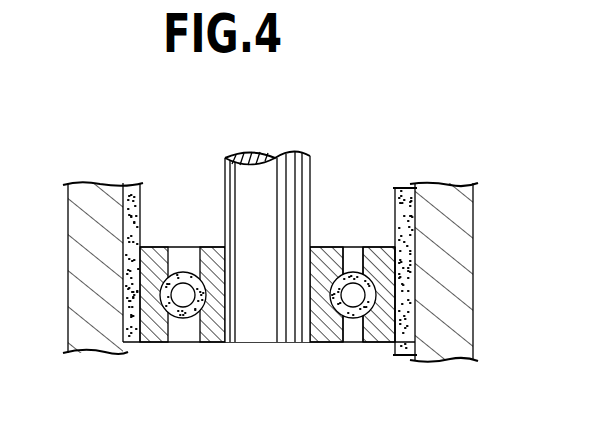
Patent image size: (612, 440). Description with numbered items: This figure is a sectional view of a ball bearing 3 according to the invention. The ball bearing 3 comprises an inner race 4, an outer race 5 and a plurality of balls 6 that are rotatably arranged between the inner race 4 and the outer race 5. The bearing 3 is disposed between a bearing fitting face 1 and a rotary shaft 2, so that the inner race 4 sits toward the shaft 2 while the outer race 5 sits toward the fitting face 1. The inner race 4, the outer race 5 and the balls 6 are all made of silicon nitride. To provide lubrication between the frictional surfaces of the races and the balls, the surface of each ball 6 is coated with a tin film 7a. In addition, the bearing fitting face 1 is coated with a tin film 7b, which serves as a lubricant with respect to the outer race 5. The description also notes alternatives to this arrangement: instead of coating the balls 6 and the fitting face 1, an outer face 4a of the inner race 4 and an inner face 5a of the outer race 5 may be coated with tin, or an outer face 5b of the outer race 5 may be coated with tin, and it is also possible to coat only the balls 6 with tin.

The bearing fitting face 1 is at (413, 353).
The rotary shaft 2 is at (242, 203).
The ball bearing 3 is at (357, 240).
The inner race 4 is at (317, 246).
The outer face of the inner race 4a is at (343, 247).
The outer race 5 is at (380, 246).
The inner face of the outer race 5a is at (363, 247).
The outer face of the outer race 5b is at (393, 268).
The ball 6 is at (350, 300).
The tin film 7a is at (355, 317).
The tin film 7b is at (437, 337).